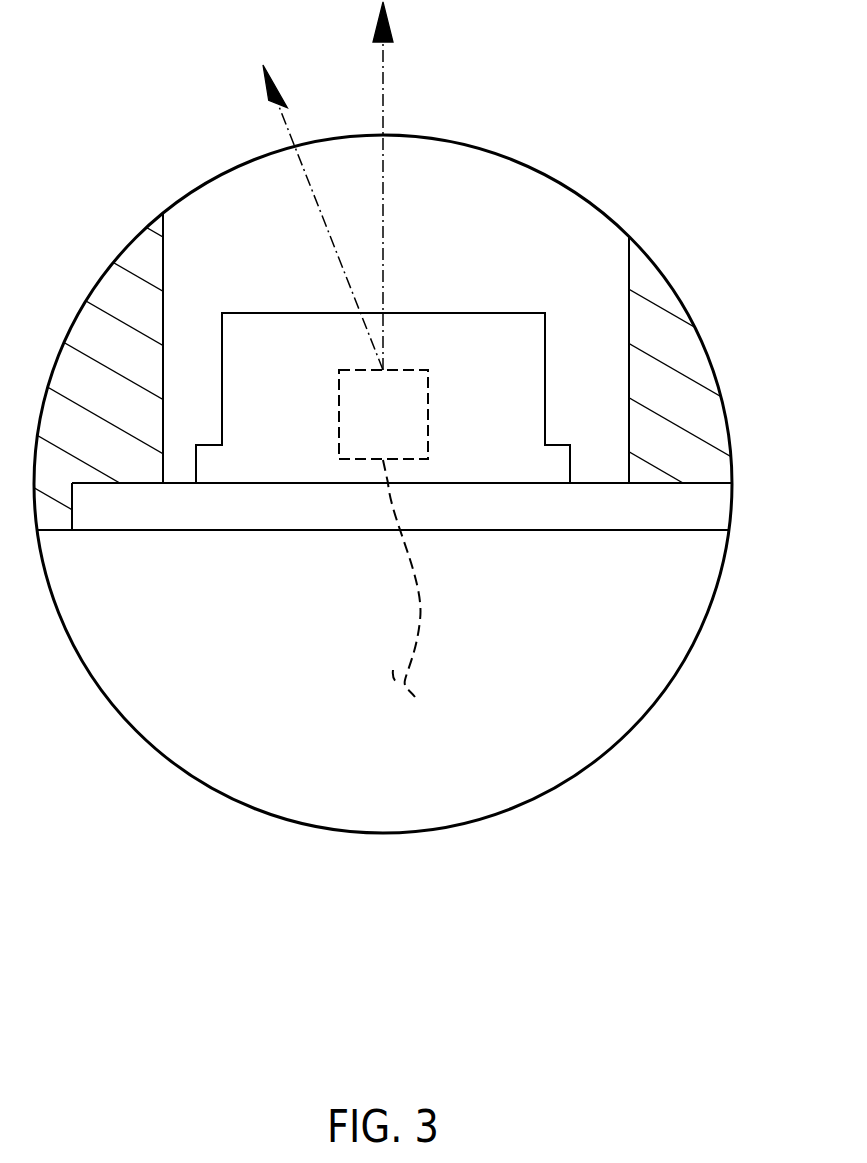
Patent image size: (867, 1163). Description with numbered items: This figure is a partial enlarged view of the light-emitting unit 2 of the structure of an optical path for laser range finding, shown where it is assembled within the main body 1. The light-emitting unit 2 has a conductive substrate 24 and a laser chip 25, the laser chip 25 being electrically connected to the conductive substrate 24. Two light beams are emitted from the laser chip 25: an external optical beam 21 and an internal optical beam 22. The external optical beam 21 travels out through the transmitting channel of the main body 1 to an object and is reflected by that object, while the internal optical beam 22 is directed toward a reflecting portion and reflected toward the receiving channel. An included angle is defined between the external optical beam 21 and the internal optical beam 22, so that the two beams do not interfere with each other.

The main body 1 is at (678, 350).
The light-emitting unit 2 is at (383, 505).
The external optical beam 21 is at (385, 150).
The internal optical beam 22 is at (307, 170).
The conductive substrate 24 is at (290, 443).
The laser chip 25 is at (349, 460).